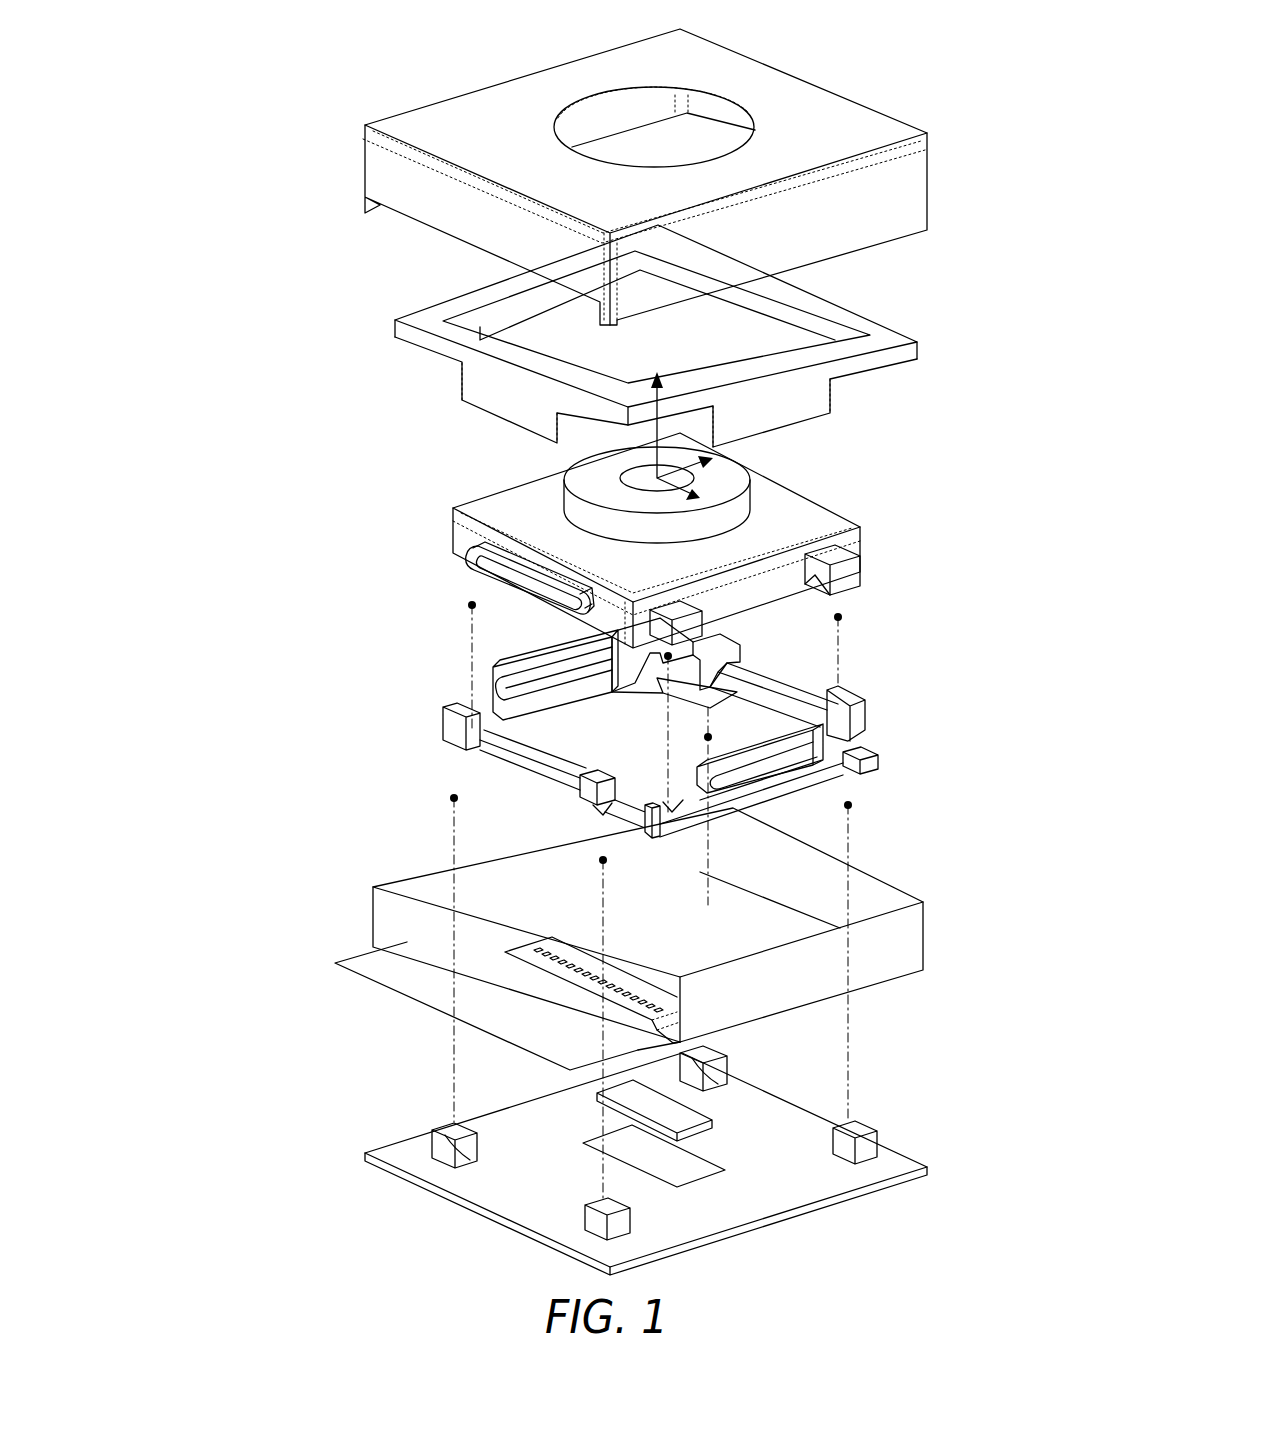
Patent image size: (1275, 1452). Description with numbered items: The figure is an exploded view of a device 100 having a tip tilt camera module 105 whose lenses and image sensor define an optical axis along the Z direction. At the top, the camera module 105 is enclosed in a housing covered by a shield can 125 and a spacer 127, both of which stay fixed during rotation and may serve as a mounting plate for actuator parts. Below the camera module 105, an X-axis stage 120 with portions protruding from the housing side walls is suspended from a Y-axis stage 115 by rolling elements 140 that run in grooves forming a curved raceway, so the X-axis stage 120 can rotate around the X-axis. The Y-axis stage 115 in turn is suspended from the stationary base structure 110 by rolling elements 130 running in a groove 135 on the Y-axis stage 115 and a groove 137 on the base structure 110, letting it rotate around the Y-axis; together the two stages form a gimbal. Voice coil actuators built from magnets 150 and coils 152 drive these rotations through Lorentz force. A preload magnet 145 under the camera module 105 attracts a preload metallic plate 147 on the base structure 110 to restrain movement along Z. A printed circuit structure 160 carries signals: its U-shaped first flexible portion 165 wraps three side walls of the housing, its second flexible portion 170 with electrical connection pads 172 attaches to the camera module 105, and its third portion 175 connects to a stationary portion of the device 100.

The device 100 is at (877, 28).
The shield can 125 is at (368, 172).
The spacer 127 is at (394, 332).
The camera module 105 is at (830, 518).
The magnets 150 is at (476, 550).
The coils 152 is at (472, 572).
The X-axis stage 120 is at (856, 562).
The rolling elements 140 is at (888, 629).
The Y-axis stage 115 is at (452, 718).
The rolling elements 130 is at (893, 820).
The groove 135 is at (605, 816).
The printed circuit structure 160 is at (372, 916).
The first flexible portion 165 is at (923, 918).
The electrical connection pads 172 is at (524, 954).
The third portion 175 is at (398, 980).
The second flexible portion 170 is at (577, 990).
The preload magnet 145 is at (677, 1112).
The base structure 110 is at (368, 1153).
The groove 137 is at (455, 1163).
The preload metallic plate 147 is at (690, 1170).